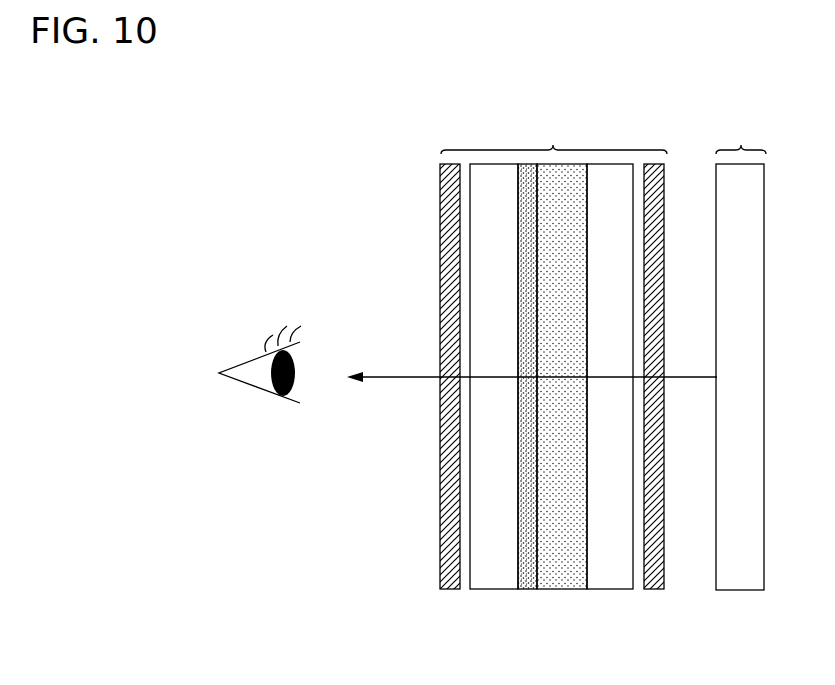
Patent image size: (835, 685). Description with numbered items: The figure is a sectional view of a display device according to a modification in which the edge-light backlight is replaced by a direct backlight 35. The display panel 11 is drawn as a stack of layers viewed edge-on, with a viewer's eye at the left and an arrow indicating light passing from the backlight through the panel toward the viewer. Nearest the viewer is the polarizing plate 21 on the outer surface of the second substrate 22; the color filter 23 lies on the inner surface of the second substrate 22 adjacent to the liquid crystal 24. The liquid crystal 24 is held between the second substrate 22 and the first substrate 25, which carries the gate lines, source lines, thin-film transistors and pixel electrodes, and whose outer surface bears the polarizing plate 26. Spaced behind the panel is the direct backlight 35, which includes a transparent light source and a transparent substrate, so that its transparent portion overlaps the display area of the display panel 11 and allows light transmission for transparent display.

The display panel 11 is at (554, 135).
The polarizing plate 21 is at (445, 590).
The second substrate 22 is at (491, 590).
The color filter 23 is at (524, 590).
The liquid crystal 24 is at (559, 590).
The first substrate 25 is at (607, 590).
The polarizing plate 26 is at (651, 590).
The direct backlight 35 is at (741, 353).